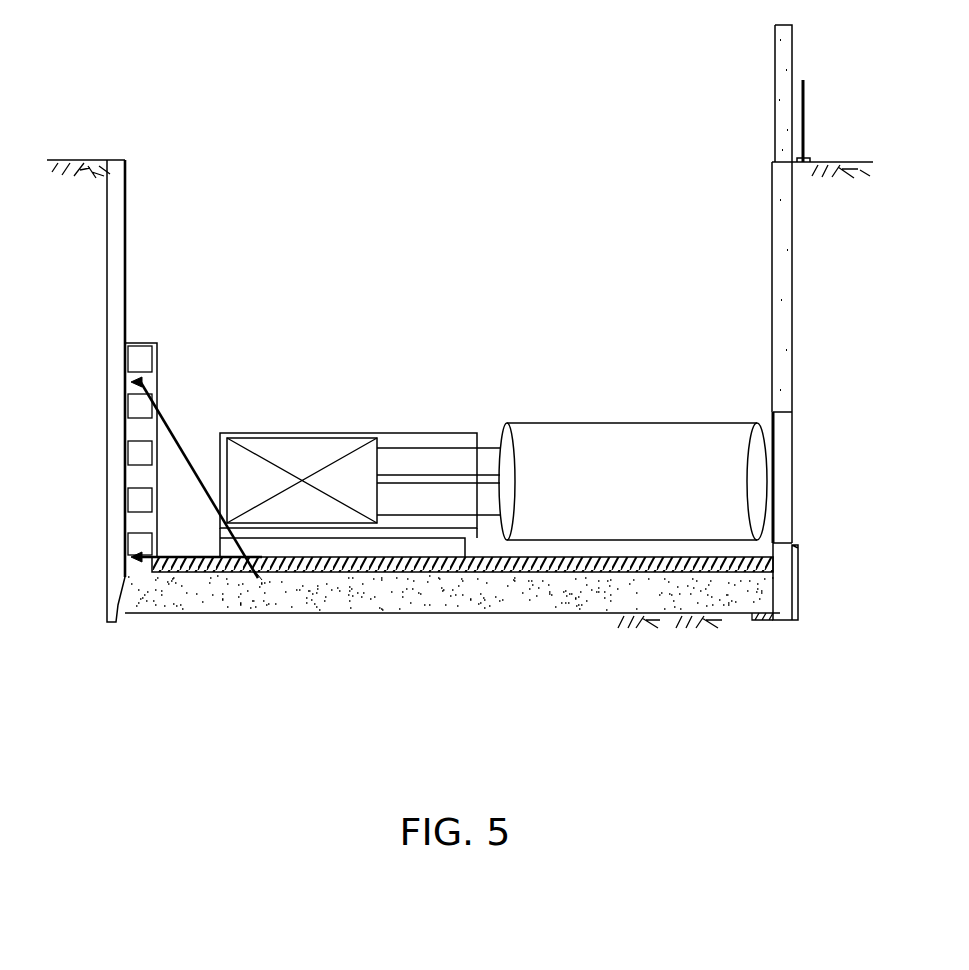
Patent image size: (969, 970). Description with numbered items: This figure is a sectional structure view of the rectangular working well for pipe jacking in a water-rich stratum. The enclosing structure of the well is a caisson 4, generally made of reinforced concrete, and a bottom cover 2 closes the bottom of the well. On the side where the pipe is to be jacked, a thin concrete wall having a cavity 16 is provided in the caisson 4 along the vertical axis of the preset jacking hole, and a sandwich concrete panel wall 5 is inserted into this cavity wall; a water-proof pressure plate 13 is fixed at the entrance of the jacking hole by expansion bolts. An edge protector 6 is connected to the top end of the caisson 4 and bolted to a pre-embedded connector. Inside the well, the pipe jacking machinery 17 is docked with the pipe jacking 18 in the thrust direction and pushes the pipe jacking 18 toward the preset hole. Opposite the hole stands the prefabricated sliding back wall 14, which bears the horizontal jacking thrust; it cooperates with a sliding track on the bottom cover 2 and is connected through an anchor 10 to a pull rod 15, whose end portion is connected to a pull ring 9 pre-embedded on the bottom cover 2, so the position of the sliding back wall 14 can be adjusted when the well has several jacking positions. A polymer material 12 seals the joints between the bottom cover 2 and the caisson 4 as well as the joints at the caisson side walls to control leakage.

The bottom cover 2 is at (408, 603).
The caisson 4 is at (110, 452).
The sandwich concrete panel wall 5 is at (783, 82).
The edge protector 6 is at (805, 118).
The pull ring 9 is at (258, 580).
The anchor 10 is at (152, 362).
The polymer material 12 is at (797, 617).
The water-proof pressure plate 13 is at (772, 422).
The sliding back wall 14 is at (150, 535).
The pull rod 15 is at (178, 418).
The thin concrete wall having a cavity 16 is at (780, 437).
The pipe jacking machinery 17 is at (299, 465).
The pipe jacking 18 is at (590, 462).